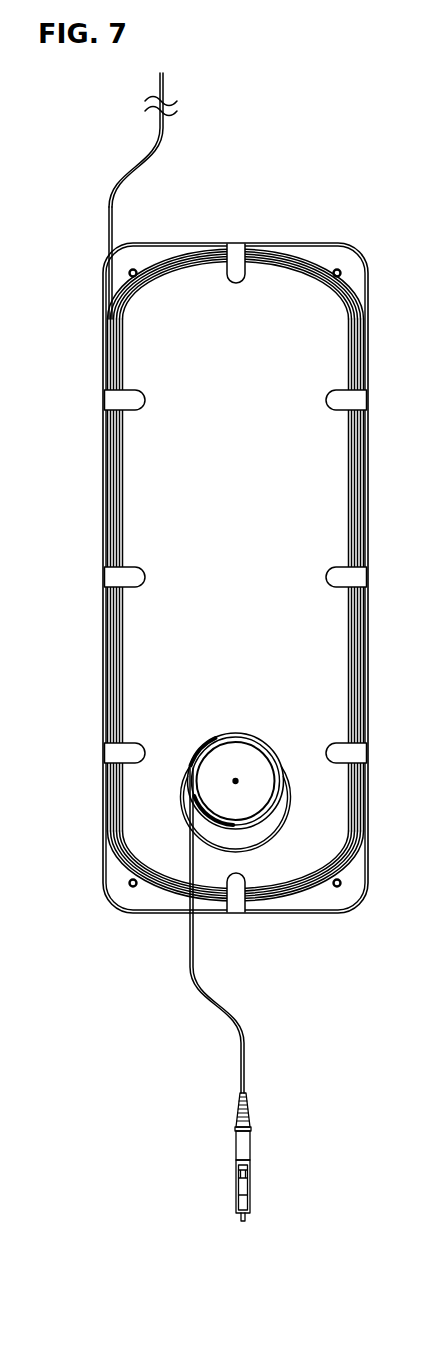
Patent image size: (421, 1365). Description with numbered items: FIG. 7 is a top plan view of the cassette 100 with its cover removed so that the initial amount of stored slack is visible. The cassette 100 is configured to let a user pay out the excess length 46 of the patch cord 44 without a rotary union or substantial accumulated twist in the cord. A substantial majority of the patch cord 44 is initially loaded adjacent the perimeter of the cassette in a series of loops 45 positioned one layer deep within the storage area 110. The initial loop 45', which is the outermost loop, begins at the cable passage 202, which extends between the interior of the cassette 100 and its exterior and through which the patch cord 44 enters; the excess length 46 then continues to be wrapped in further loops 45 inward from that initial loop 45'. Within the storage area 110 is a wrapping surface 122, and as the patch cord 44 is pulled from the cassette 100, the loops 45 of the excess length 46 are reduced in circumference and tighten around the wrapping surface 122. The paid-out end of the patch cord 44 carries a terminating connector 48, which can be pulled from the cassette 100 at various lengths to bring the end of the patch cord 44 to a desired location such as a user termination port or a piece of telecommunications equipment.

The patch cord 44 is at (106, 208).
The cassette 100 is at (357, 237).
The cable passage 202 is at (110, 285).
The loops 45 is at (236, 297).
The excess length 46 is at (102, 500).
The initial loop 45' is at (198, 861).
The storage area 110 is at (255, 541).
The wrapping surface 122 is at (273, 792).
The terminating connector 48 is at (248, 1193).